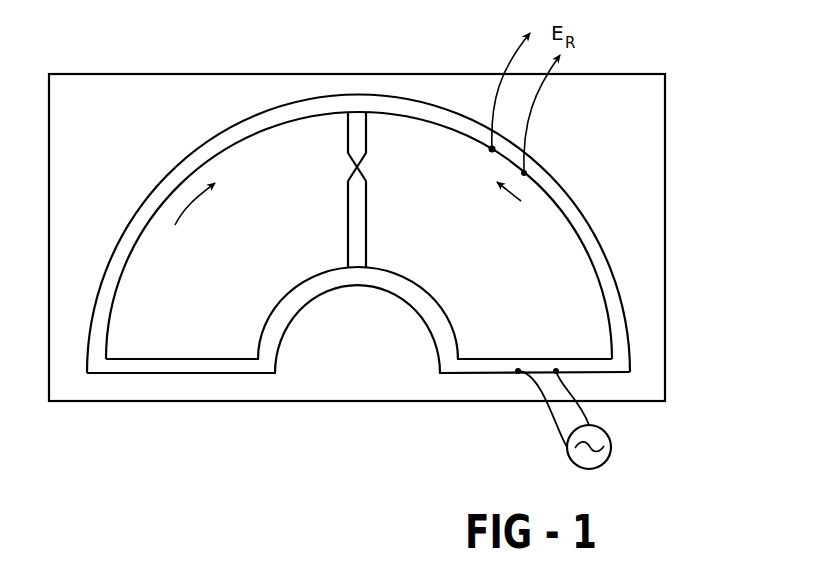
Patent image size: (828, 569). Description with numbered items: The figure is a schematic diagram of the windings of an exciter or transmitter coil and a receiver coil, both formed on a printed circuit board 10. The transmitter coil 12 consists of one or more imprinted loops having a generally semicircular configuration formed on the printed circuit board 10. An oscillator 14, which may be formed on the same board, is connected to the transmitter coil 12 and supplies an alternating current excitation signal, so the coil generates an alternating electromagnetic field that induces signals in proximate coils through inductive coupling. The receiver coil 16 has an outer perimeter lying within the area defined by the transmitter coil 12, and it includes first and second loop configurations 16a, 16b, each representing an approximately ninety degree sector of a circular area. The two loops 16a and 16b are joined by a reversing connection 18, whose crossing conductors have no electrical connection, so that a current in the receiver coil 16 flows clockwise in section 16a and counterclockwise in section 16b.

The printed circuit board 10 is at (664, 97).
The transmitter coil 12 is at (589, 258).
The oscillator 14 is at (611, 447).
The receiver coil 16 is at (174, 360).
The first loop configuration 16a is at (348, 230).
The second loop configuration 16b is at (366, 228).
The reversing connection 18 is at (358, 168).